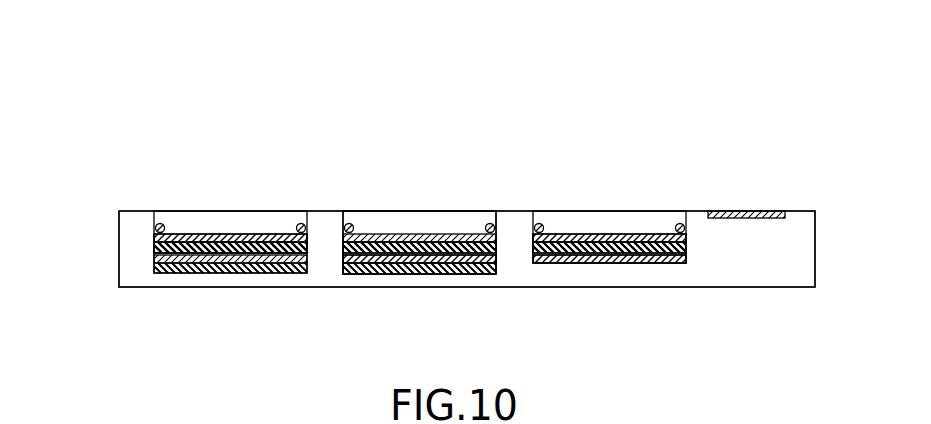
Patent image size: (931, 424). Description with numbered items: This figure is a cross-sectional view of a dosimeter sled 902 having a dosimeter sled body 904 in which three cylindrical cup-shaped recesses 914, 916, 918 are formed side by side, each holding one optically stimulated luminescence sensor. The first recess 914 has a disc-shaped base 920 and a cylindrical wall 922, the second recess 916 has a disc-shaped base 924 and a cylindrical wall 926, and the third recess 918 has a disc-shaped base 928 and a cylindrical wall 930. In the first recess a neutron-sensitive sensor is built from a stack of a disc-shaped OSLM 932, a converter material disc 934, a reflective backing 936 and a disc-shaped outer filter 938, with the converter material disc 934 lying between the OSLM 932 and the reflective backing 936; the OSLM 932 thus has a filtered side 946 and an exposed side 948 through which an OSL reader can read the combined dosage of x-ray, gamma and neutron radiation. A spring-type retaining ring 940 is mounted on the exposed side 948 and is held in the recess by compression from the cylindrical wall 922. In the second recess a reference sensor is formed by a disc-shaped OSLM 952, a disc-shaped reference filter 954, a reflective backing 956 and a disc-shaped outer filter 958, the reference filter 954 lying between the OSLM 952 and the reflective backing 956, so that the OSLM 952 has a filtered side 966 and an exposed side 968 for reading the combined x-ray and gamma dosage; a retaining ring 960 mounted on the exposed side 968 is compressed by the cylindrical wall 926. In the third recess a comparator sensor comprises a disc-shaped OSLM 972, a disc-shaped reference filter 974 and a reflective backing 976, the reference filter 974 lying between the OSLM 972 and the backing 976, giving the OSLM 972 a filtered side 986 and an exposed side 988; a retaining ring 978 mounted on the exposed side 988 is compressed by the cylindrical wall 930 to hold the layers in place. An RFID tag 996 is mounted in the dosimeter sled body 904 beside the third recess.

The dosimeter sled 902 is at (150, 88).
The dosimeter sled body 904 is at (803, 212).
The recess 914 is at (217, 222).
The recess 916 is at (400, 213).
The recess 918 is at (593, 213).
The disc-shaped base 920 is at (238, 253).
The cylindrical wall 922 is at (293, 215).
The disc-shaped base 924 is at (425, 258).
The cylindrical wall 926 is at (354, 217).
The disc-shaped base 928 is at (576, 248).
The cylindrical wall 930 is at (541, 217).
The disc-shaped OSLM 932 is at (153, 233).
The converter material disc 934 is at (153, 245).
The reflective backing 936 is at (153, 258).
The disc-shaped outer filter 938 is at (153, 270).
The retaining ring 940 is at (153, 215).
The filtered side 946 is at (188, 248).
The exposed side 948 is at (240, 235).
The disc-shaped OSLM 952 is at (340, 238).
The disc-shaped reference filter 954 is at (500, 245).
The reflective backing 956 is at (500, 262).
The disc-shaped outer filter 958 is at (500, 272).
The retaining ring 960 is at (487, 210).
The filtered side 966 is at (383, 250).
The exposed side 968 is at (413, 233).
The disc-shaped OSLM 972 is at (690, 237).
The disc-shaped reference filter 974 is at (690, 249).
The reflective backing 976 is at (690, 260).
The retaining ring 978 is at (672, 210).
The filtered side 986 is at (637, 258).
The exposed side 988 is at (620, 231).
The RFID tag 996 is at (745, 212).